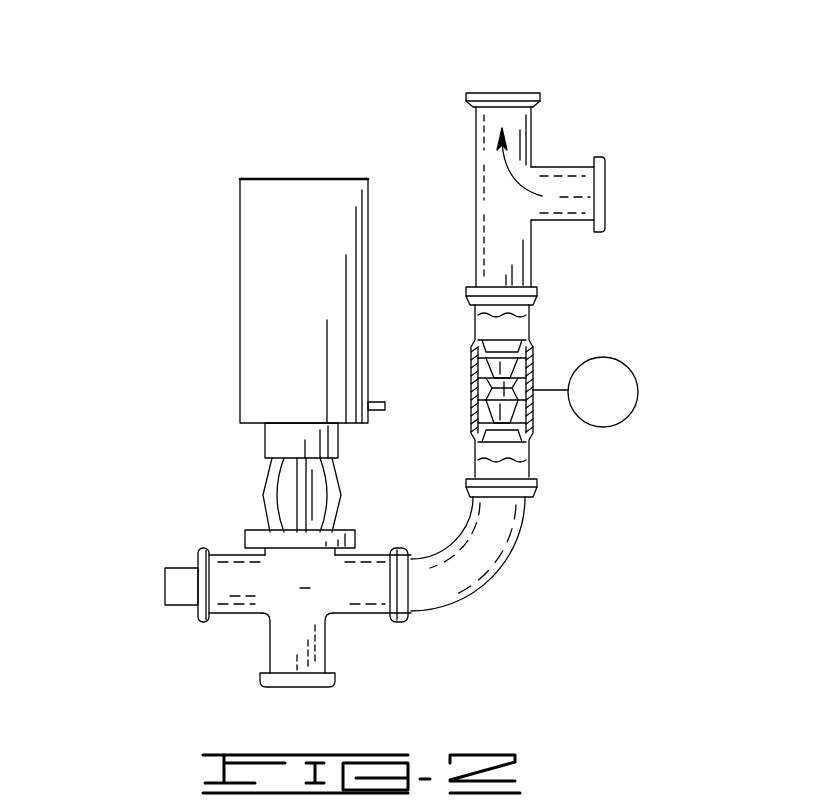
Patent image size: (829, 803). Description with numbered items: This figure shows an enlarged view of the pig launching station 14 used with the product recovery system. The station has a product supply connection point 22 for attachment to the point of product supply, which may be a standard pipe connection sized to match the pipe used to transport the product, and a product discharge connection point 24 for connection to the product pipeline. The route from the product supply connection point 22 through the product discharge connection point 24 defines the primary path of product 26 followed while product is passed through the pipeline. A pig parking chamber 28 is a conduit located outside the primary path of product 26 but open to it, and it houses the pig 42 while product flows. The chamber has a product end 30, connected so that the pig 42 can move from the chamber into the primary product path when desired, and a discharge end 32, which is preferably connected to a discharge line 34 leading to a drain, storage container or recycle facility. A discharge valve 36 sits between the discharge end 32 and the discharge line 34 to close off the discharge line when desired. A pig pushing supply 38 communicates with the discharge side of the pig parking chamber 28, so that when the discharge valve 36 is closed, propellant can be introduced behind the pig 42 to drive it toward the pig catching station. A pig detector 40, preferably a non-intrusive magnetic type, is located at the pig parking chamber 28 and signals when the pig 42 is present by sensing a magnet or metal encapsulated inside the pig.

The pig launching station 14 is at (160, 86).
The product supply connection point 22 is at (607, 197).
The product discharge connection point 24 is at (508, 93).
The primary path of product 26 is at (498, 172).
The pig parking chamber 28 is at (532, 418).
The product end 30 is at (528, 322).
The discharge end 32 is at (530, 467).
The discharge line 34 is at (325, 652).
The discharge valve 36 is at (287, 179).
The pig pushing supply 38 is at (165, 582).
The pig detector 40 is at (625, 362).
The pig 42 is at (493, 368).